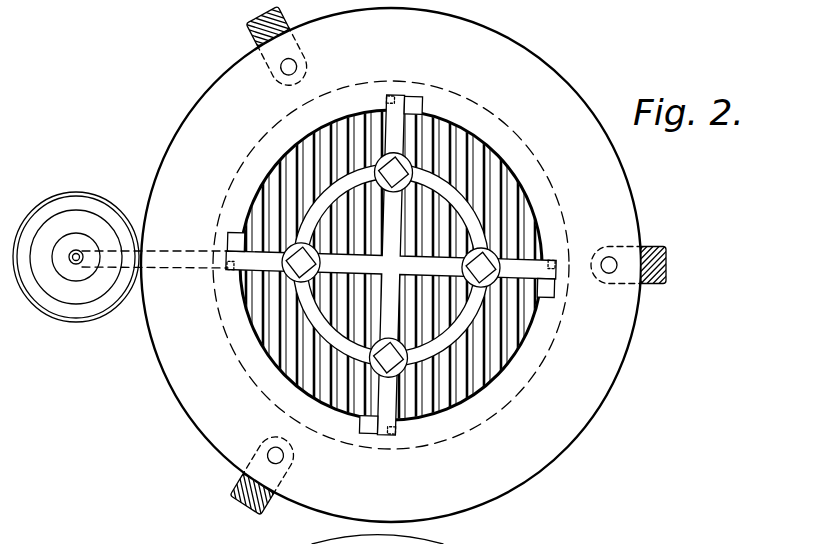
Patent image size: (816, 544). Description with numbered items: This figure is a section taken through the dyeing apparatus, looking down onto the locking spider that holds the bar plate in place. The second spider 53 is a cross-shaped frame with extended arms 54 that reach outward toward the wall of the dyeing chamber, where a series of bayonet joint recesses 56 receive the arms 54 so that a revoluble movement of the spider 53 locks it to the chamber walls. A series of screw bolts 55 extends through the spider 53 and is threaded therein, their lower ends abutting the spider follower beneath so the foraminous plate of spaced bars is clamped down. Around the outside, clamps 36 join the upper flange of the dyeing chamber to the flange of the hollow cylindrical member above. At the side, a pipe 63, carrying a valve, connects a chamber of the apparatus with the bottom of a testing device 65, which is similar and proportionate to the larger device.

The clamps 36 is at (263, 25).
The second spider 53 is at (343, 283).
The extended arms 54 is at (258, 259).
The screw bolts 55 is at (296, 268).
The bayonet joint recesses 56 is at (231, 239).
The pipe 63 is at (174, 270).
The testing device 65 is at (70, 310).